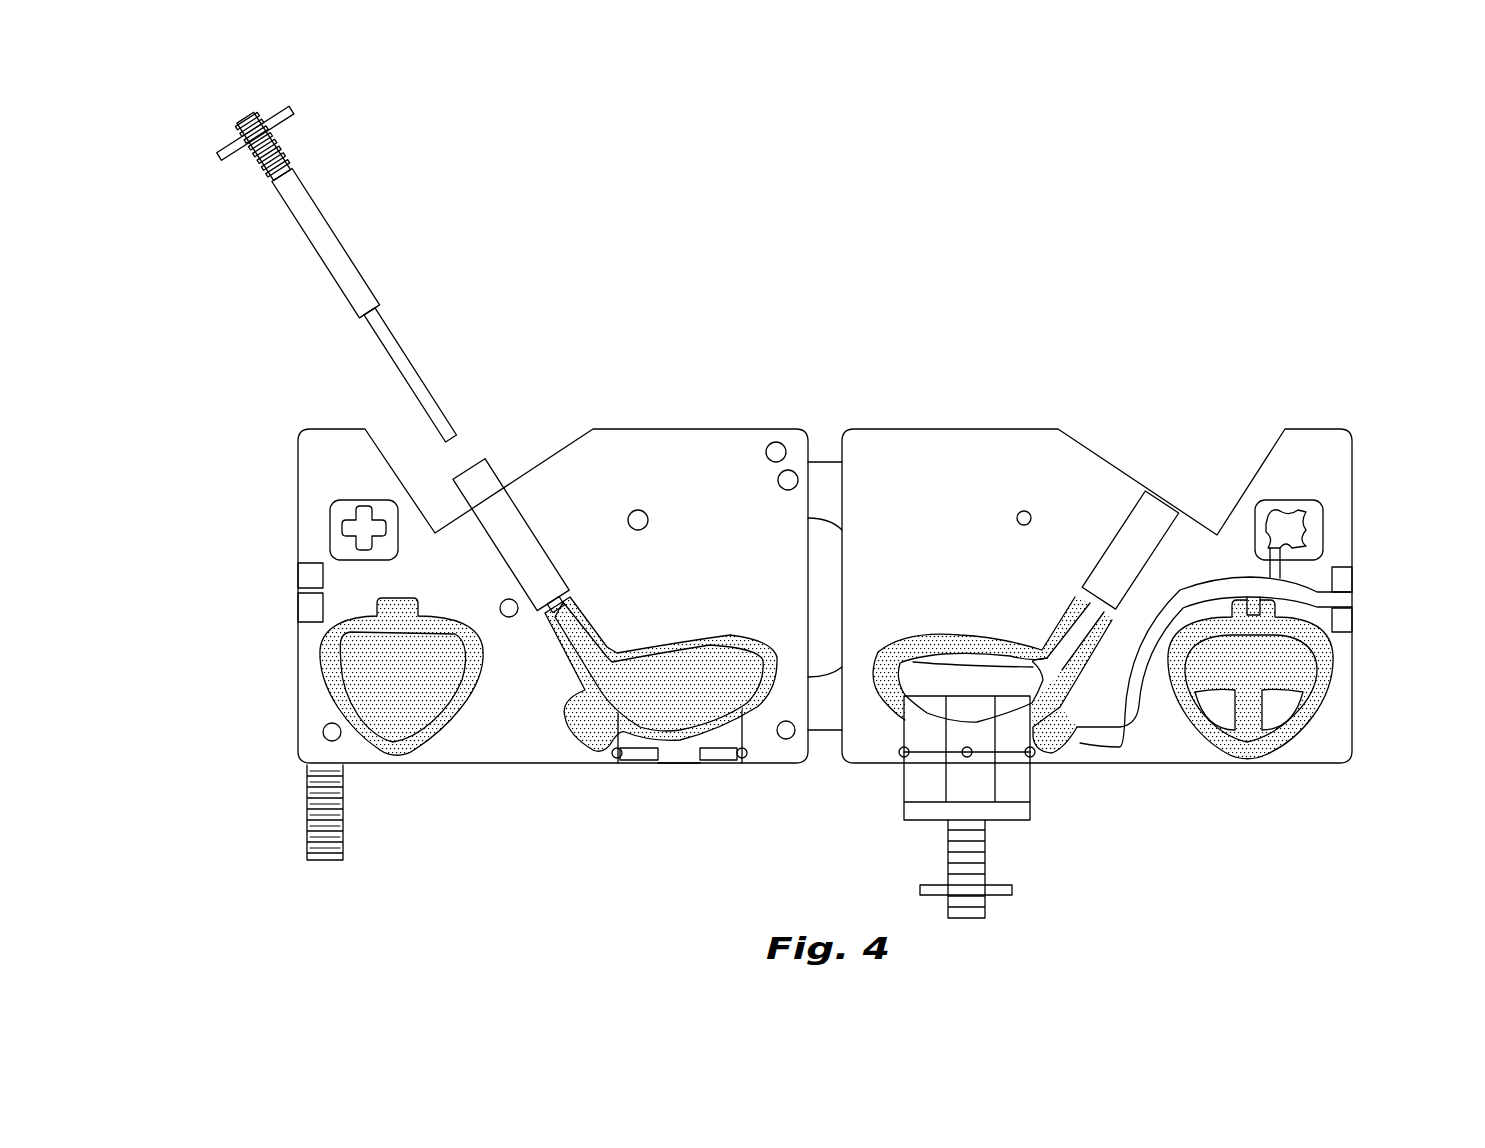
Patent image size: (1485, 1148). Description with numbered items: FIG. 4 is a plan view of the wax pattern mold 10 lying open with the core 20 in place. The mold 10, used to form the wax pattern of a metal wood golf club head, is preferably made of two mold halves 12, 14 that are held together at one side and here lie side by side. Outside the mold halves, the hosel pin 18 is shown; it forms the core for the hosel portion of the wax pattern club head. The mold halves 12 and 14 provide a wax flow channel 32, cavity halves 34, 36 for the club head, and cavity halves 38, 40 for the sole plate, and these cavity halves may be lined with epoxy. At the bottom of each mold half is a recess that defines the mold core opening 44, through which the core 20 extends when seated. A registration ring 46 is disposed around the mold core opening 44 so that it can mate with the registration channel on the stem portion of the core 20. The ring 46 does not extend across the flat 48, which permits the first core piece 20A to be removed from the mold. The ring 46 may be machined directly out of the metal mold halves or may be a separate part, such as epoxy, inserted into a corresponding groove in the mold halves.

The wax pattern mold 10 is at (997, 405).
The mold half 12 is at (1340, 730).
The mold half 14 is at (683, 445).
The hosel pin 18 is at (360, 283).
The core 20 is at (1040, 782).
The first core piece 20A is at (960, 653).
The wax flow channel 32 is at (1203, 595).
The cavity half 34 is at (1010, 655).
The cavity half 36 is at (675, 672).
The cavity half 38 is at (1305, 653).
The cavity half 40 is at (410, 720).
The mold core opening 44 is at (680, 794).
The registration ring 46 is at (640, 762).
The flat 48 is at (693, 762).